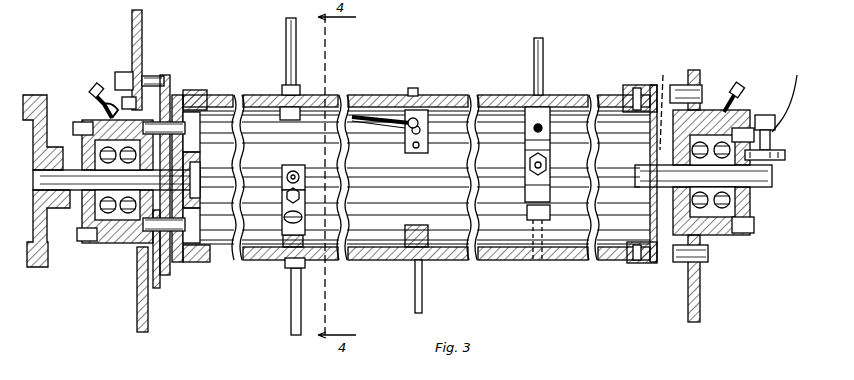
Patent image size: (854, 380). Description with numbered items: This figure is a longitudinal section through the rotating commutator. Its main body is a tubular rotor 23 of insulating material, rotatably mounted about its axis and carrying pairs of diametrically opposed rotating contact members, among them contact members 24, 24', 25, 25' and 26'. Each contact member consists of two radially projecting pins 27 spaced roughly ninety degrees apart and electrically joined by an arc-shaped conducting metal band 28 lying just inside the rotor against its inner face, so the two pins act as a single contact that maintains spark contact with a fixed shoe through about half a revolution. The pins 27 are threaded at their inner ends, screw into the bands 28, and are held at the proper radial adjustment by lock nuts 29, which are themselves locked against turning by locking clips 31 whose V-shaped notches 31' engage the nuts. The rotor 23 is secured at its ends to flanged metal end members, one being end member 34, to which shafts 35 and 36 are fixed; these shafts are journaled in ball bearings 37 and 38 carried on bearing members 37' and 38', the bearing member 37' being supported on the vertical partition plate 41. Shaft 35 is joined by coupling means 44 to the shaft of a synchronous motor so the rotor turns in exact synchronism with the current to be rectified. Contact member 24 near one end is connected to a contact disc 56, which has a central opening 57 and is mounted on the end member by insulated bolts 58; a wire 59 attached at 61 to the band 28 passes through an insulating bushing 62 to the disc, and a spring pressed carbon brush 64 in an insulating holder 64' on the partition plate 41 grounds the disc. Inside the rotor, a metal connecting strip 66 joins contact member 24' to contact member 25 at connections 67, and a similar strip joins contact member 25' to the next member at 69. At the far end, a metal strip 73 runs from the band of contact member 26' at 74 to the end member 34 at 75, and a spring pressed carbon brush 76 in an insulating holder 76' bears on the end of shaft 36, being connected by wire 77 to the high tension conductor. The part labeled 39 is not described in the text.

The tubular rotor 23 is at (490, 262).
The rotating contact member 24 is at (283, 296).
The rotating contact member 24' is at (273, 56).
The rotating contact member 25 is at (403, 77).
The rotating contact member 25' is at (404, 286).
The rotating contact member 26' is at (561, 66).
The radially projecting pins 27 is at (416, 88).
The conducting metal bands 28 is at (285, 112).
The lock nuts 29 is at (298, 90).
The locking clips 31 is at (328, 179).
The V-shaped notches 31' is at (278, 208).
The flanged metal end member 34 is at (660, 263).
The shaft 35 is at (108, 243).
The shaft 36 is at (755, 205).
The ball bearing 37 is at (128, 286).
The bearing member 37' is at (93, 90).
The ball bearing 38 is at (711, 196).
The bearing member 38' is at (723, 178).
The bolt 39 is at (178, 270).
The vertical partition plate 41 is at (132, 30).
The coupling means 44 is at (33, 267).
The contact disc 56 is at (176, 118).
The central opening 57 is at (180, 175).
The insulated bolts 58 is at (200, 118).
The wire 59 is at (228, 255).
The connection 61 is at (305, 212).
The insulating bushing 62 is at (198, 175).
The spring pressed carbon brush 64 is at (177, 152).
The insulating holder 64' is at (142, 69).
The metal connecting strip 66 is at (395, 125).
The connection 67 is at (420, 124).
The connection 69 is at (158, 270).
The metal strip 73 is at (550, 185).
The connection 74 is at (530, 165).
The connection 75 is at (662, 75).
The spring pressed carbon brush 76 is at (717, 179).
The insulating holder 76' is at (777, 137).
The wire 77 is at (793, 88).